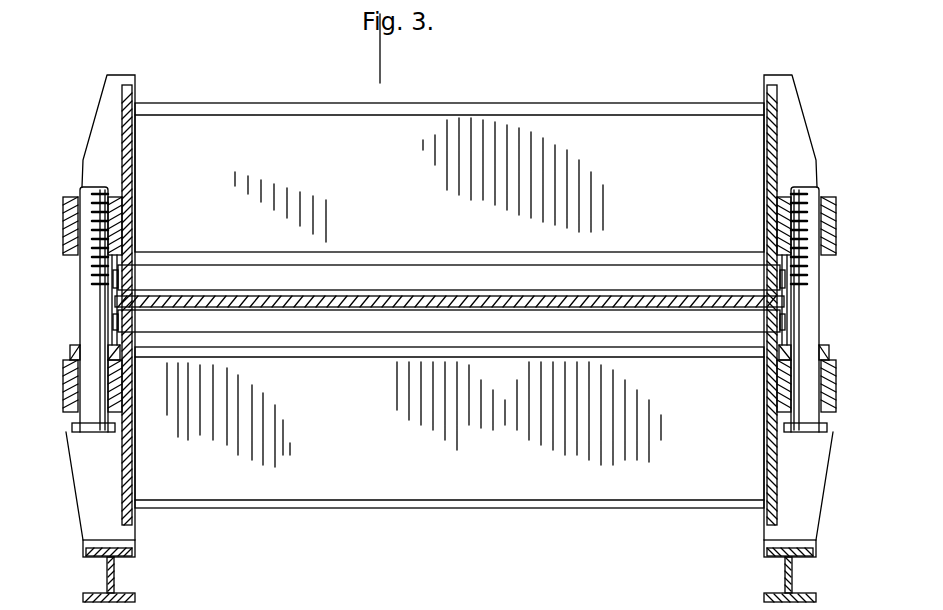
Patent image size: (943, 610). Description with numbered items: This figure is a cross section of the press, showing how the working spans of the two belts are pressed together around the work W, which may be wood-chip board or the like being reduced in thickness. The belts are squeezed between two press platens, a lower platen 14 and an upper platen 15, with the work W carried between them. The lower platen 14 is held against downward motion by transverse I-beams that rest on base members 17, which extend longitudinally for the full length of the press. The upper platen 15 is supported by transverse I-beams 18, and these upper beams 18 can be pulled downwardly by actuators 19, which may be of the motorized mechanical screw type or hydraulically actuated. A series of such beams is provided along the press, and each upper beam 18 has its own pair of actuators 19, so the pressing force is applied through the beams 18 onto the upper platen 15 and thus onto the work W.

The lower press platen 14 is at (486, 324).
The upper press platen 15 is at (472, 277).
The base member 17 is at (790, 568).
The upper transverse I-beam 18 is at (634, 130).
The actuator 19 is at (90, 348).
The work W is at (356, 297).